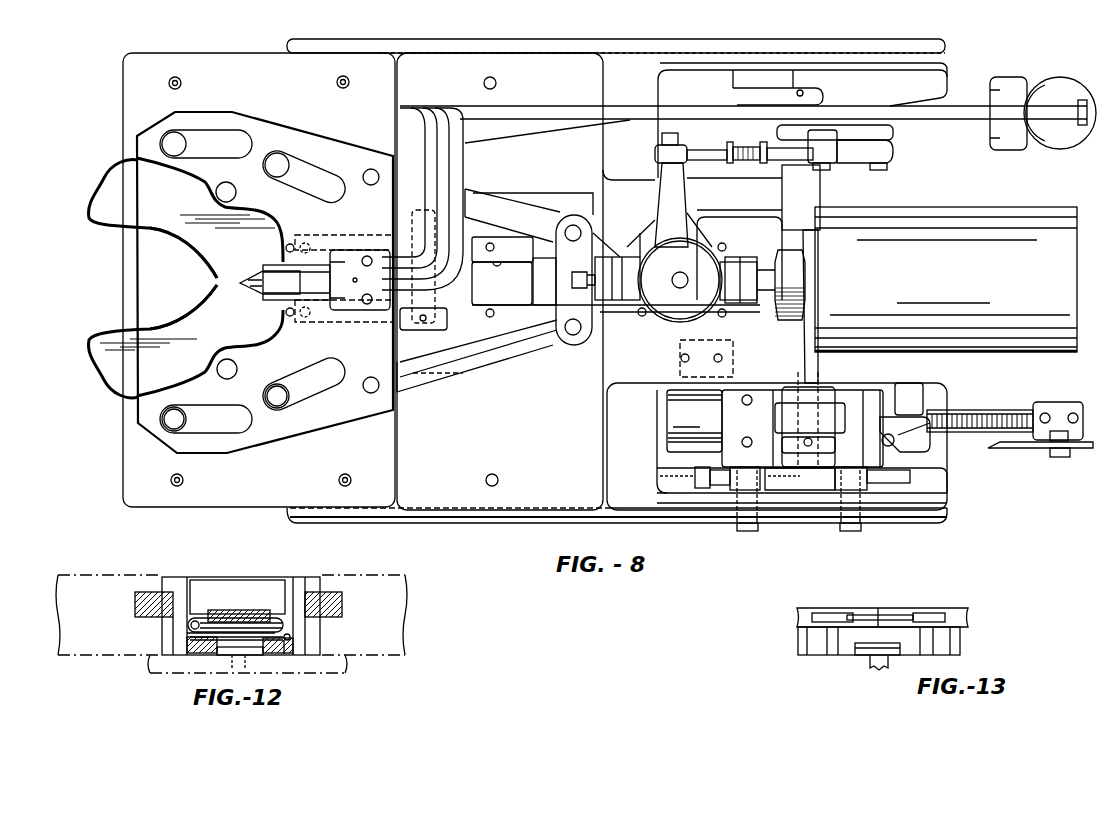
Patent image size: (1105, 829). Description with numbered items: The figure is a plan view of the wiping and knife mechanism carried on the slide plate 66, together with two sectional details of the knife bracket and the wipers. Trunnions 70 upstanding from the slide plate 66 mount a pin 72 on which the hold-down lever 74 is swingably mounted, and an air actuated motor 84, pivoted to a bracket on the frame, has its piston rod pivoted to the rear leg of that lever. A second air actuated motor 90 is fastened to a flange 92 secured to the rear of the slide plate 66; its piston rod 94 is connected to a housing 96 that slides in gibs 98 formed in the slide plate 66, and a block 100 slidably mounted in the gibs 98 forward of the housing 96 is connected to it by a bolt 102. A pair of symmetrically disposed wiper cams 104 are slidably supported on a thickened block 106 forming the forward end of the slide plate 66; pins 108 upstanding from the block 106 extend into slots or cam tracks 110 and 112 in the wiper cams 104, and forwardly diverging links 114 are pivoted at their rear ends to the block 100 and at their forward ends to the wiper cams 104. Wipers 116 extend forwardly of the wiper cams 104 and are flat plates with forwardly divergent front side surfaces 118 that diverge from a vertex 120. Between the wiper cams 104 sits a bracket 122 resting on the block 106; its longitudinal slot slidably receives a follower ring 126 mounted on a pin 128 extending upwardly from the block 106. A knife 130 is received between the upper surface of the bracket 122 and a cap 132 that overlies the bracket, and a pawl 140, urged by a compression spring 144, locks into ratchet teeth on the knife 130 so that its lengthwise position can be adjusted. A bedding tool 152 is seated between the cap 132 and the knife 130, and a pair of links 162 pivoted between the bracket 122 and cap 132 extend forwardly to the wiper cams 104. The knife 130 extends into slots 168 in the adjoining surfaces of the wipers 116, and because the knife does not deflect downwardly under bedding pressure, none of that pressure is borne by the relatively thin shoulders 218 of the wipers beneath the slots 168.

In FIG. 8, the slide plate 66 is at (556, 91).
In FIG. 8, the trunnions 70 is at (450, 316).
In FIG. 8, the pin 72 is at (412, 229).
In FIG. 8, the hold-down lever 74 is at (428, 127).
In FIG. 8, the air actuated motor 84 is at (1017, 80).
In FIG. 8, the air actuated motor 90 is at (1030, 222).
In FIG. 8, the flange 92 is at (810, 212).
In FIG. 8, the piston rod 94 is at (767, 257).
In FIG. 8, the housing 96 is at (627, 267).
In FIG. 8, the gibs 98 is at (505, 263).
In FIG. 8, the block 100 is at (585, 315).
In FIG. 8, the bolt 102 is at (622, 283).
In FIG. 8, the wiper cams 104 is at (215, 118).
In FIG. 12, the wiper cams 104 is at (410, 610).
In FIG. 8, the thickened block 106 is at (283, 484).
In FIG. 12, the thickened block 106 is at (148, 682).
In FIG. 8, the pins 108 is at (270, 397).
In FIG. 8, the slot or cam track 110 is at (215, 423).
In FIG. 8, the slot or cam track 112 is at (315, 383).
In FIG. 8, the links 114 is at (487, 203).
In FIG. 8, the wipers 116 is at (108, 193).
In FIG. 13, the wipers 116 is at (992, 611).
In FIG. 8, the front side surfaces 118 is at (142, 237).
In FIG. 8, the vertex 120 is at (217, 278).
In FIG. 12, the bracket 122 is at (207, 652).
In FIG. 13, the bracket 122 is at (945, 642).
In FIG. 12, the follower ring 126 is at (182, 638).
In FIG. 12, the pin 128 is at (248, 668).
In FIG. 8, the knife 130 is at (243, 295).
In FIG. 12, the knife 130 is at (232, 617).
In FIG. 13, the knife 130 is at (855, 613).
In FIG. 12, the cap 132 is at (233, 583).
In FIG. 12, the pawl 140 is at (243, 630).
In FIG. 12, the compression spring 144 is at (288, 647).
In FIG. 8, the bedding tool 152 is at (272, 295).
In FIG. 12, the bedding tool 152 is at (208, 612).
In FIG. 12, the links 162 is at (145, 593).
In FIG. 13, the slots 168 is at (928, 615).
In FIG. 13, the shoulders 218 is at (818, 623).